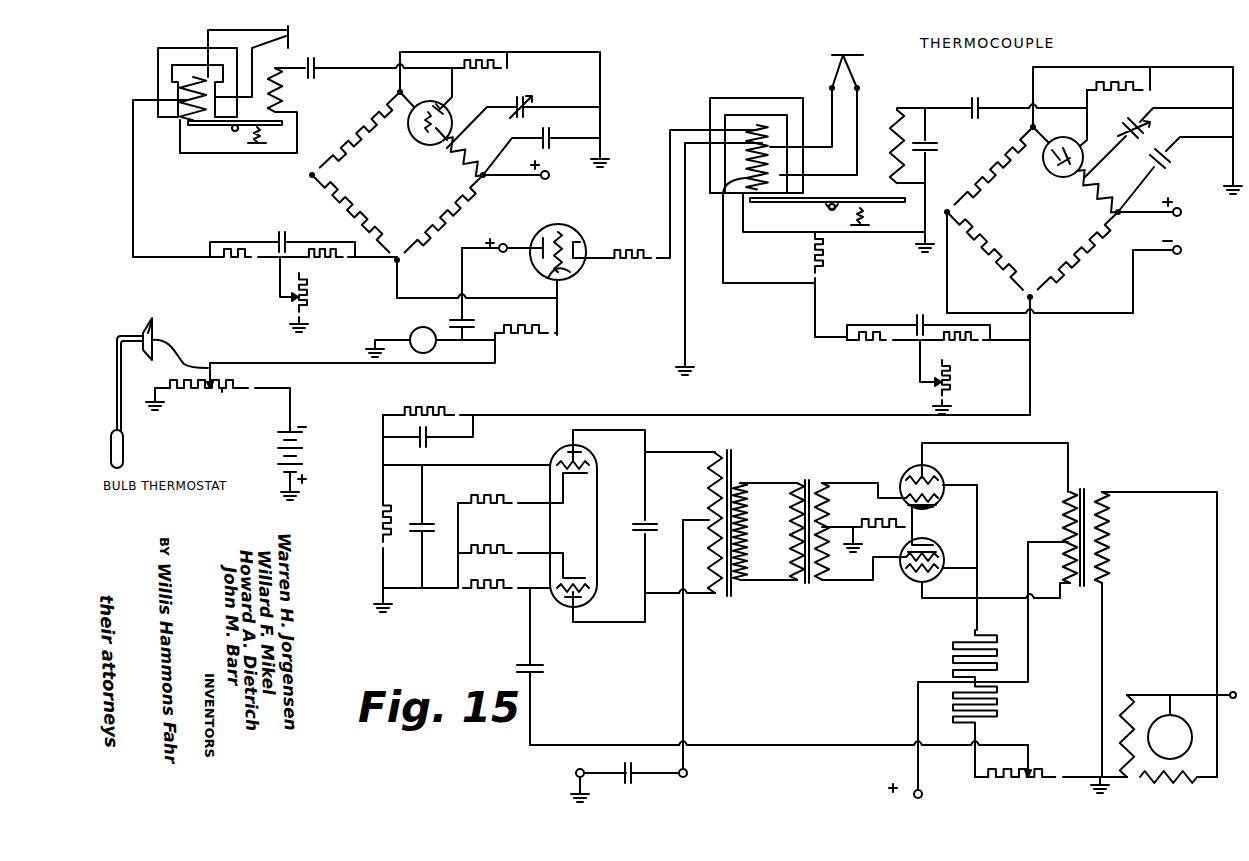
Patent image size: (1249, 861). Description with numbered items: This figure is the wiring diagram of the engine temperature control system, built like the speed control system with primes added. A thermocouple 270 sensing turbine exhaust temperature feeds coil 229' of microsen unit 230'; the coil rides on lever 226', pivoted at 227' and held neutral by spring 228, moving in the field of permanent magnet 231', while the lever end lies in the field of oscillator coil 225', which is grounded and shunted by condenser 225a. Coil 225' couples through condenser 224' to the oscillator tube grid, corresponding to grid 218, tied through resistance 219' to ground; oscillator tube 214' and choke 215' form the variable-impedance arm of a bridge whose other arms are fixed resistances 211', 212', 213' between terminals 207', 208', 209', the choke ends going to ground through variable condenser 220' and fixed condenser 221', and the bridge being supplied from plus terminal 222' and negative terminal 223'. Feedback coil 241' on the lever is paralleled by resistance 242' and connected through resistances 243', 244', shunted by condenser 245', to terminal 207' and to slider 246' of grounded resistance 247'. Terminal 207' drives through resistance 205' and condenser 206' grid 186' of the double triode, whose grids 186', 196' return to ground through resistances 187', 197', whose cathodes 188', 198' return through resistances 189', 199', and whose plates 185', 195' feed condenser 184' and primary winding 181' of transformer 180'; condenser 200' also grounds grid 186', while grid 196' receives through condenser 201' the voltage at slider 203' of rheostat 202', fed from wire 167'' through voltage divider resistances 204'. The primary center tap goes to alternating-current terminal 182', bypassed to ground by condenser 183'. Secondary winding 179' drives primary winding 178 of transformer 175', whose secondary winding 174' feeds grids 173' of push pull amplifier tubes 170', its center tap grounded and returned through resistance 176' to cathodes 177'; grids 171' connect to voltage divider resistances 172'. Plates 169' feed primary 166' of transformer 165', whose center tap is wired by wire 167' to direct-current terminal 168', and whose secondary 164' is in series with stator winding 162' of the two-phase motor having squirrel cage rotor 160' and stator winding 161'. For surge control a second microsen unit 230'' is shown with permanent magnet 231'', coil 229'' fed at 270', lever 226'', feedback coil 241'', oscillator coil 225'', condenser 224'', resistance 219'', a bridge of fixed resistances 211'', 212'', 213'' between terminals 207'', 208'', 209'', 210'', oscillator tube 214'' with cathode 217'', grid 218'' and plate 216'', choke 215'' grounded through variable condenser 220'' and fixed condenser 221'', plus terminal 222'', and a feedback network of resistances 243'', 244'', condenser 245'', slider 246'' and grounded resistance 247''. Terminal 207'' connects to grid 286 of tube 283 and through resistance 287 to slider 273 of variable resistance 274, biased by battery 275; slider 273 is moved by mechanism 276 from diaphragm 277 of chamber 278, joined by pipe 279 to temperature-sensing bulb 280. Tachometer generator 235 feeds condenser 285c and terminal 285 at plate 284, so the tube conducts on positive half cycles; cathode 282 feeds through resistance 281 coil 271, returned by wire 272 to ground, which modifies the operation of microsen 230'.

The microsen unit 230'' is at (170, 68).
The permanent magnet 231'' is at (195, 47).
The coil 229'' is at (154, 93).
The thermocouple 270' is at (274, 55).
The feedback coil 241'' is at (215, 178).
The lever 226'' is at (235, 123).
The oscillator coil 225'' is at (304, 74).
The condenser 224'' is at (382, 66).
The resistance 219'' is at (482, 44).
The terminal 209'' is at (376, 92).
The fixed resistance 213'' is at (363, 132).
The terminal 208'' is at (343, 176).
The fixed resistance 212'' is at (362, 210).
The terminal 207'' is at (475, 296).
The fixed resistance 211'' is at (447, 212).
The terminal 210'' is at (502, 188).
The oscillator tube 214'' is at (432, 135).
The cathode 217'' is at (438, 95).
The grid 218'' is at (468, 107).
The plate 216'' is at (429, 148).
The choke 215'' is at (523, 127).
The variable condenser 220'' is at (546, 94).
The fixed condenser 221'' is at (541, 143).
The plus terminal 222'' is at (541, 176).
The condenser 245'' is at (282, 234).
The resistance 243'' is at (253, 269).
The resistance 244'' is at (349, 272).
The slider 246'' is at (265, 290).
The grounded resistance 247'' is at (329, 302).
The tachometer generator 235 is at (430, 322).
The tube 283 is at (564, 226).
The cathode 282 is at (578, 246).
The grid 218 is at (558, 252).
The plate 284 is at (541, 239).
The terminal 285 is at (503, 254).
The grid 286 is at (569, 272).
The resistance 281 is at (650, 253).
The condenser 285c is at (468, 325).
The resistance 287 is at (520, 341).
The slider 273 is at (222, 380).
The variable resistance 274 is at (222, 393).
The battery 275 is at (305, 449).
The diaphragm 277 is at (154, 331).
The chamber 278 is at (148, 334).
The mechanism 276 is at (178, 349).
The pipe 279 is at (122, 393).
The bulb 280 is at (124, 456).
The permanent magnet 231' is at (756, 132).
The microsen unit 230' is at (767, 130).
The coil 229' is at (765, 142).
The thermocouple 270 is at (836, 106).
The coil 271 is at (755, 128).
The wire 272 is at (686, 323).
The feedback coil 241' is at (808, 218).
The lever 226' is at (827, 211).
The pivot 227' is at (838, 193).
The spring 228 is at (870, 214).
The oscillator coil 225' is at (904, 154).
The condenser 225a is at (929, 145).
The condenser 224' is at (1006, 97).
The resistance 219' is at (1138, 106).
The terminal 209' is at (1014, 122).
The fixed resistance 213' is at (997, 168).
The terminal 208' is at (1038, 257).
The fixed resistance 212' is at (990, 247).
The fixed resistance 211' is at (1081, 253).
The terminal 207' is at (1053, 351).
The oscillator tube 214' is at (1078, 171).
The choke 215' is at (1158, 143).
The variable condenser 220' is at (1154, 125).
The fixed condenser 221' is at (1175, 174).
The plus terminal 222' is at (1172, 209).
The negative terminal 223' is at (1183, 277).
The resistance 242' is at (844, 284).
The condenser 245' is at (918, 317).
The resistance 243' is at (892, 349).
The resistance 244' is at (983, 353).
The slider 246' is at (909, 373).
The grounded resistance 247' is at (966, 387).
The resistance 205' is at (706, 393).
The condenser 206' is at (429, 440).
The resistance 187' is at (363, 538).
The condenser 200' is at (411, 526).
The resistance 189' is at (510, 491).
The resistance 199' is at (510, 538).
The resistance 197' is at (506, 575).
The plate 185' is at (586, 518).
The grid 186' is at (598, 455).
The cathode 188' is at (601, 486).
The cathode 198' is at (575, 551).
The grid 196' is at (601, 594).
The plate 195' is at (602, 606).
The condenser 184' is at (632, 564).
The primary winding 181' is at (695, 523).
The transformer 180' is at (730, 538).
The secondary winding 179' is at (765, 507).
The primary winding 178 is at (790, 550).
The transformer 175' is at (813, 547).
The secondary winding 174' is at (857, 531).
The resistance 176' is at (874, 526).
The push pull amplifier tubes 170' is at (907, 530).
The plates 169' is at (949, 520).
The grids 171' is at (947, 480).
The grids 173' is at (947, 526).
The cathodes 177' is at (937, 537).
The primary 166' is at (1046, 545).
The transformer 165' is at (1081, 554).
The secondary 164' is at (1156, 634).
The wire 167'' is at (1001, 612).
The voltage divider resistances 172' is at (975, 656).
The voltage divider resistances 204' is at (975, 729).
The wire 167' is at (895, 736).
The non-grounded terminal 168' is at (926, 795).
The condenser 201' is at (553, 666).
The slider 203' is at (1049, 761).
The variable resistance 202' is at (1051, 790).
The terminal 182' is at (704, 653).
The condenser 183' is at (625, 784).
The stator winding 161' is at (1173, 720).
The squirrel cage rotor 160' is at (1180, 717).
The stator winding 162' is at (1178, 791).